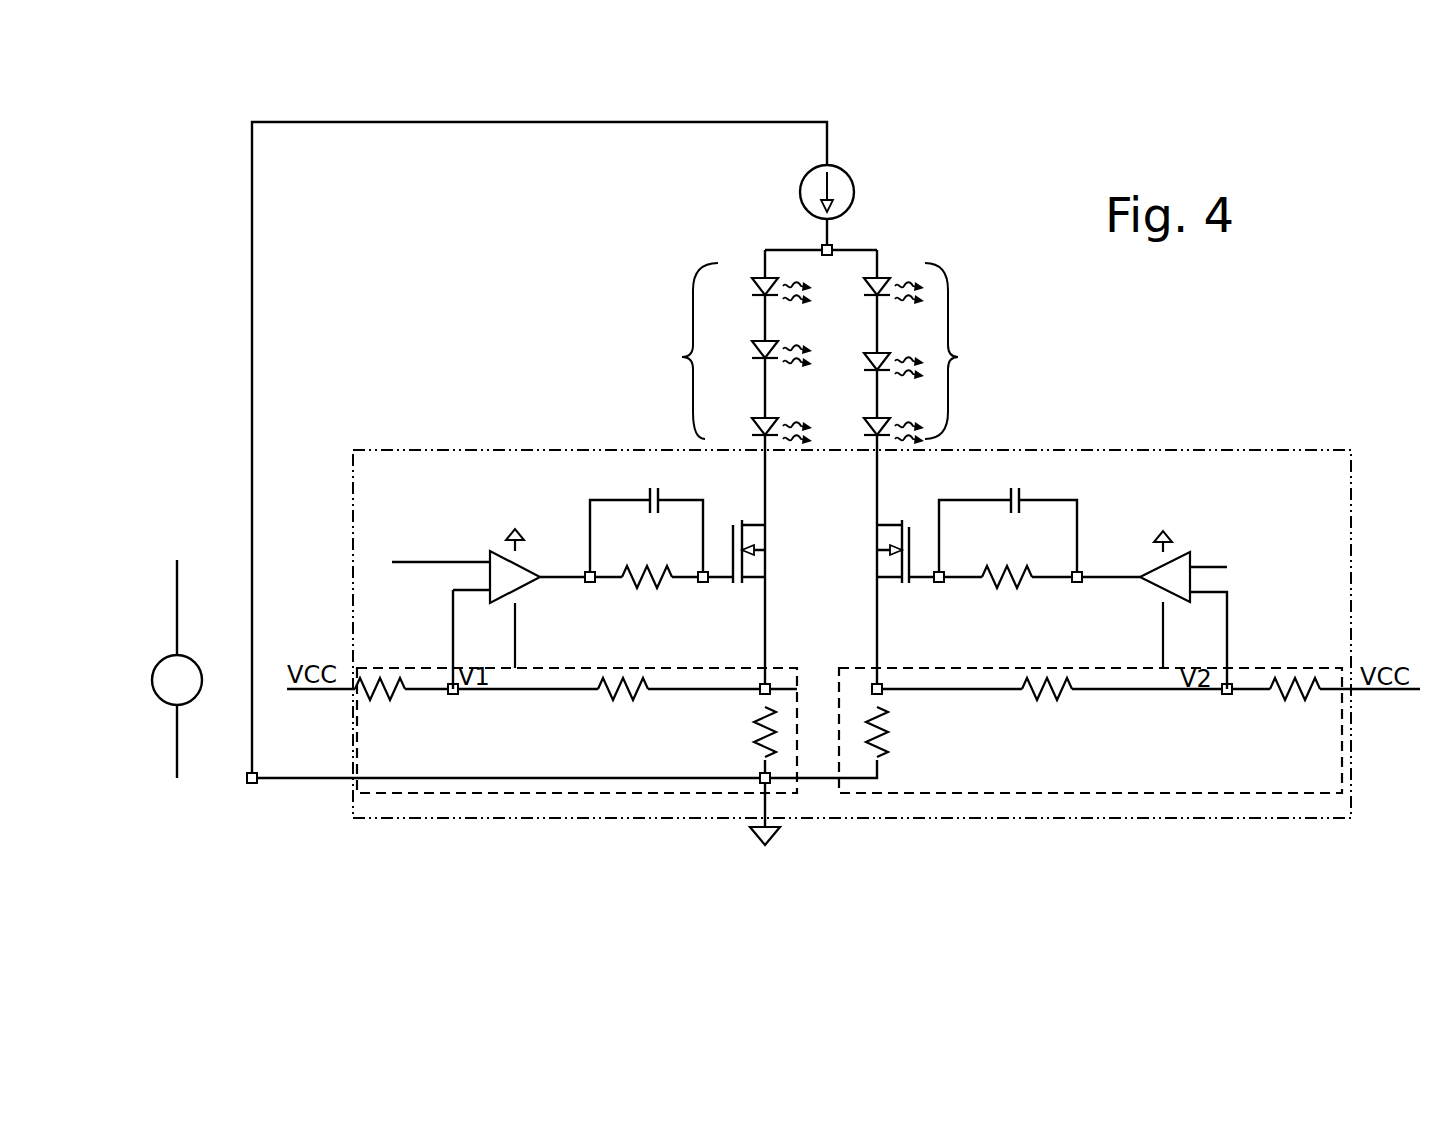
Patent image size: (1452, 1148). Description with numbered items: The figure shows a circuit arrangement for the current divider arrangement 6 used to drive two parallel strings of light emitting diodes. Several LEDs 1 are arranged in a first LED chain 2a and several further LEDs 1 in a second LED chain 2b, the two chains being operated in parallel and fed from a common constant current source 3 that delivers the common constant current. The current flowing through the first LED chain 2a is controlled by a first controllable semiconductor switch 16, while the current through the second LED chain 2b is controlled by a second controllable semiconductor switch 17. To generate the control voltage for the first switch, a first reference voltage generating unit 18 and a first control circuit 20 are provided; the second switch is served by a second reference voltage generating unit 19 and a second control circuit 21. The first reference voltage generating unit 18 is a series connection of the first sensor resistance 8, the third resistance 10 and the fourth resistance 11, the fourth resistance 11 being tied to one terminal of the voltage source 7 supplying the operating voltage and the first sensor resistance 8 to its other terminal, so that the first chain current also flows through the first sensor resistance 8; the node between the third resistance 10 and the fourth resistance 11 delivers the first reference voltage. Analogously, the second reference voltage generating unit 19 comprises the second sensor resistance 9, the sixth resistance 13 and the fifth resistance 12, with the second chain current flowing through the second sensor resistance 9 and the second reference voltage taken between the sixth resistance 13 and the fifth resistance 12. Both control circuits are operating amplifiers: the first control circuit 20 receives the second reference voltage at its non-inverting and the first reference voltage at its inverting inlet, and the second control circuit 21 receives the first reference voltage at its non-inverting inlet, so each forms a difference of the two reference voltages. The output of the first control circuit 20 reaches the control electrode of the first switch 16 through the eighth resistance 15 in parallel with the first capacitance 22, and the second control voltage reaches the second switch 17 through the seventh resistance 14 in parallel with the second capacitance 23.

The LED 1 is at (757, 285).
The first LED chain 2a is at (681, 351).
The second LED chain 2b is at (960, 351).
The constant current source 3 is at (842, 192).
The current divider arrangement 6 is at (1220, 450).
The voltage source 7 is at (188, 676).
The first sensor resistance 8 is at (752, 735).
The second sensor resistance 9 is at (890, 725).
The third resistance 10 is at (622, 695).
The fourth resistance 11 is at (392, 688).
The fifth resistance 12 is at (1290, 688).
The sixth resistance 13 is at (1045, 695).
The seventh resistance 14 is at (1010, 580).
The eighth resistance 15 is at (650, 580).
The first controllable semiconductor switch 16 is at (760, 542).
The second controllable semiconductor switch 17 is at (877, 530).
The first reference voltage generating unit 18 is at (523, 795).
The second reference voltage generating unit 19 is at (1040, 795).
The first control circuit 20 is at (525, 577).
The second control circuit 21 is at (1165, 577).
The first capacitance 22 is at (659, 495).
The second capacitance 23 is at (1020, 495).